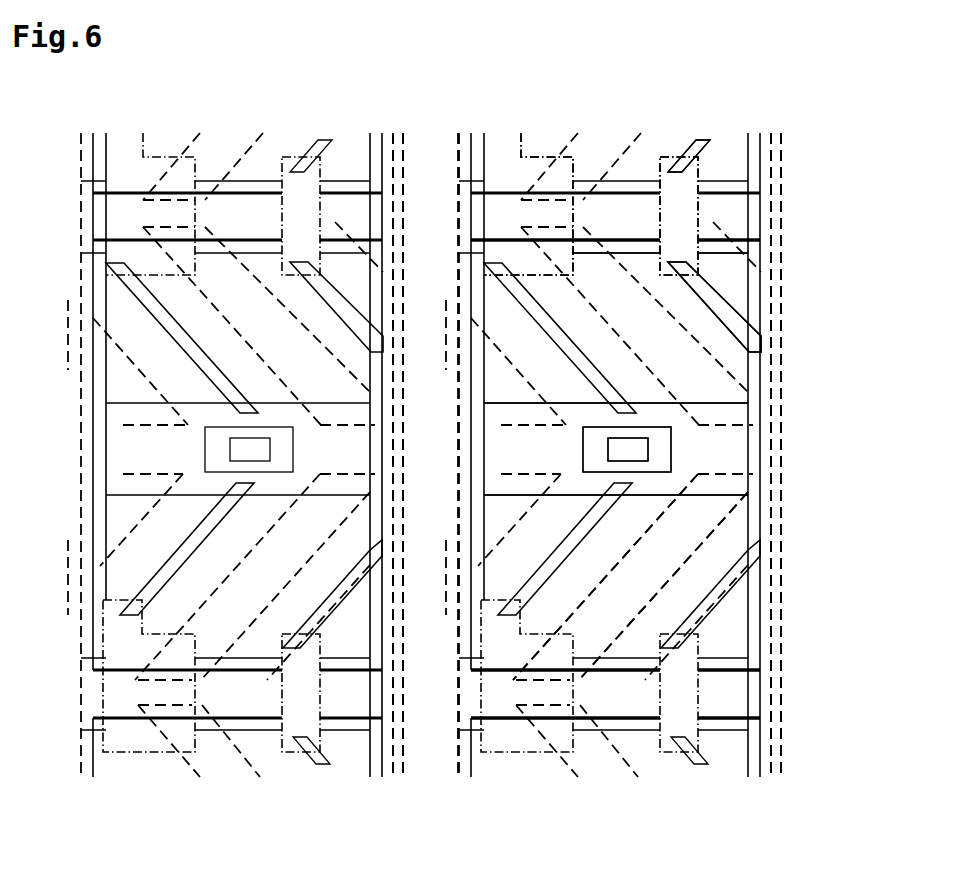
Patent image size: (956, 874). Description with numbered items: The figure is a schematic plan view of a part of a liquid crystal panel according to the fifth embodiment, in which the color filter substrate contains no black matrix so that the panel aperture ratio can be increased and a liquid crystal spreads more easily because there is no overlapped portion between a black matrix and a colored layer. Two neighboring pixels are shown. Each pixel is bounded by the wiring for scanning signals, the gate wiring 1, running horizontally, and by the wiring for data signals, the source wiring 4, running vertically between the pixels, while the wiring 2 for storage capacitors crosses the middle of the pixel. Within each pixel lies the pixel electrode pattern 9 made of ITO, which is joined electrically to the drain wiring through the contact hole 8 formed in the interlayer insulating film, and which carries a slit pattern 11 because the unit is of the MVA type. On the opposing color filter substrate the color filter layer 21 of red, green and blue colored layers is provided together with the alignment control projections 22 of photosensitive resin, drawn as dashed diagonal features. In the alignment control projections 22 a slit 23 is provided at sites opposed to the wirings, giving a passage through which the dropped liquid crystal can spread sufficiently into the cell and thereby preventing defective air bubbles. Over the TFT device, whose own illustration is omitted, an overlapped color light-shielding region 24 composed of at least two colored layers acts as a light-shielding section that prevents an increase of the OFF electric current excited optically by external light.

The wiring for scanning signals (gate wiring) 1 is at (824, 657).
The wiring for storage capacitors 2 is at (824, 400).
The wiring for data signals (source wiring) 4 is at (480, 788).
The contact hole 8 is at (659, 433).
The pixel electrode pattern 9 is at (756, 249).
The slit pattern 11 is at (722, 300).
The color filter layer 21 is at (692, 582).
The alignment control projection 22 is at (628, 157).
The slit 23 is at (423, 275).
The overlapped color light-shielding region 24 is at (540, 158).